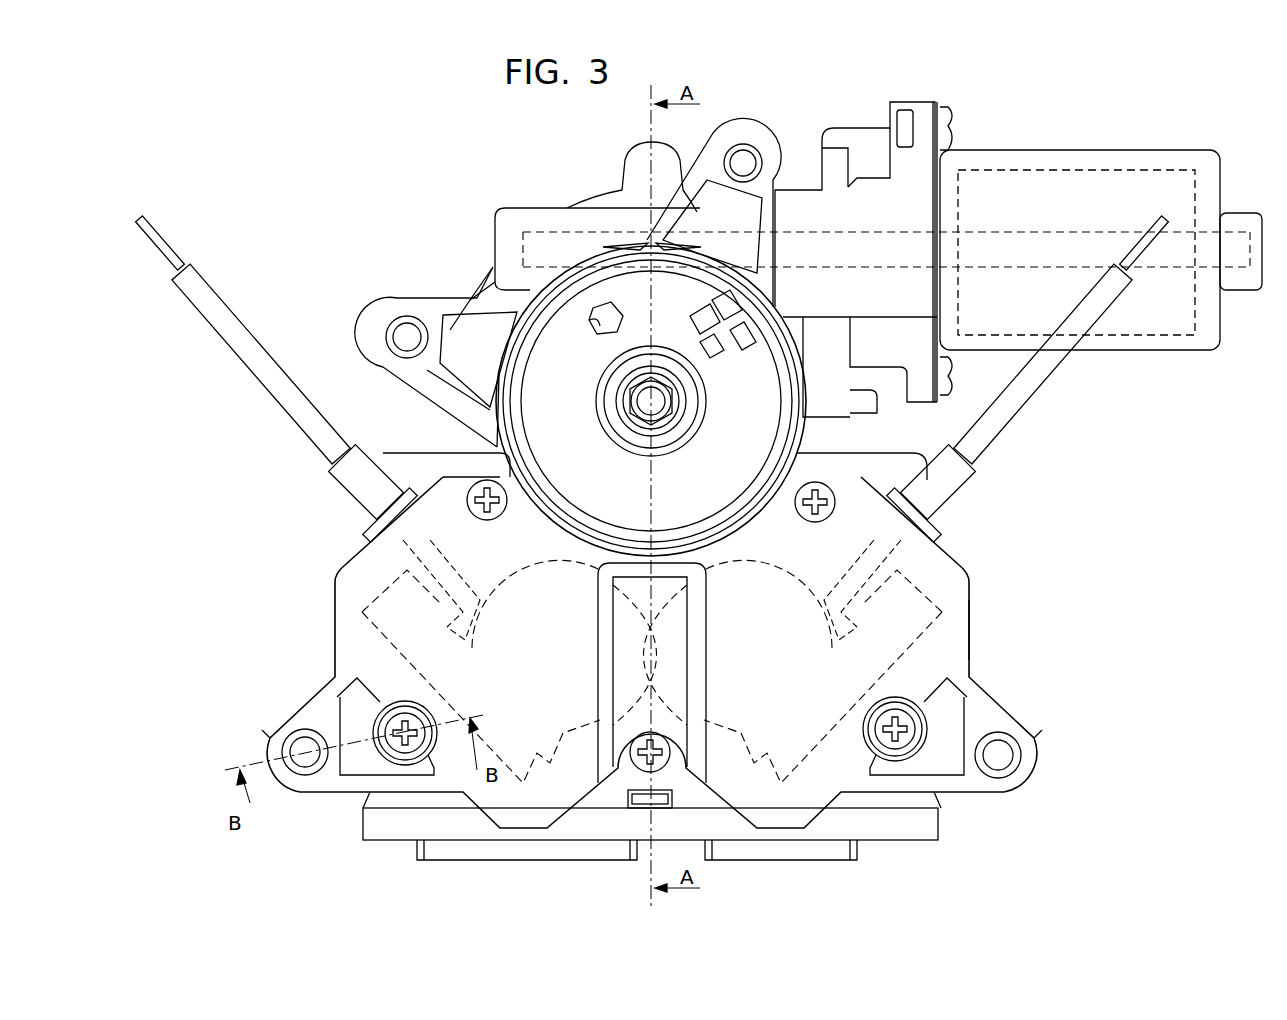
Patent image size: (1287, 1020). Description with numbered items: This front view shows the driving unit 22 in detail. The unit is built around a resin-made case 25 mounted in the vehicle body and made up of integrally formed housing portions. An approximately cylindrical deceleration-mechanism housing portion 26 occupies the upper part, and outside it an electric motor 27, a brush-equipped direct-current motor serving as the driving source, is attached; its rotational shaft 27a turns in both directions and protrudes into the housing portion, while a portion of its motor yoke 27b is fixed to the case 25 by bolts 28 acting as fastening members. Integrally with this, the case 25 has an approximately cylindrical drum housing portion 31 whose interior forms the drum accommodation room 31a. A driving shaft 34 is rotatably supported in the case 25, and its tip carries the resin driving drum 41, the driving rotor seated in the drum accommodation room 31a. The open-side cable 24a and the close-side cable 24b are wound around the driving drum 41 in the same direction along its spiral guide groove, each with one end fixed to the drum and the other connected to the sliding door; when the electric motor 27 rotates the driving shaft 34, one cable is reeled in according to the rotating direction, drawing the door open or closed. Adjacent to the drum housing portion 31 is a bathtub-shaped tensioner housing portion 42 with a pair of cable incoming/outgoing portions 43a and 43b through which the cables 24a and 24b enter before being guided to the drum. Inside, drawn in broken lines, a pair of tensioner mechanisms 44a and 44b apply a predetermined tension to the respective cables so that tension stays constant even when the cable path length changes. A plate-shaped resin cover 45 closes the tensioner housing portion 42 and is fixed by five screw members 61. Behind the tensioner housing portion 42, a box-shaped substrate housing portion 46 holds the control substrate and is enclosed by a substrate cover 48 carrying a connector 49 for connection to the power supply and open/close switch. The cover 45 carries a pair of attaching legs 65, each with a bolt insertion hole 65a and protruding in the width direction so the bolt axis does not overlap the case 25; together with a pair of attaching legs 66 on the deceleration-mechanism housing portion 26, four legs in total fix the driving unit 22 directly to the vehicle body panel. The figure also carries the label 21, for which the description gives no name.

The window regulator drive unit 21 is at (1005, 98).
The driving unit 22 is at (975, 133).
The open-side cable 24a is at (1136, 255).
The close-side cable 24b is at (172, 238).
The case 25 is at (476, 280).
The deceleration-mechanism housing portion 26 is at (598, 198).
The electric motor 27 is at (1134, 352).
The rotational shaft 27a is at (798, 250).
The motor yoke 27b is at (1138, 164).
The bolts 28 is at (945, 120).
The drum housing portion 31 is at (545, 290).
The drum accommodation room 31a is at (499, 375).
The driving shaft 34 is at (636, 404).
The driving drum 41 is at (532, 447).
The tensioner housing portion 42 is at (970, 620).
The cable incoming/outgoing portion 43a is at (912, 500).
The cable incoming/outgoing portion 43b is at (392, 512).
The tensioner mechanism 44a is at (735, 735).
The tensioner mechanism 44b is at (565, 735).
The cover 45 is at (963, 658).
The substrate housing portion 46 is at (925, 842).
The substrate cover 48 is at (876, 860).
The connector 49 is at (484, 850).
The screw members 61 is at (486, 508).
The attaching legs 65 is at (310, 796).
The bolt insertion hole 65a is at (300, 745).
The attaching legs 66 is at (745, 138).